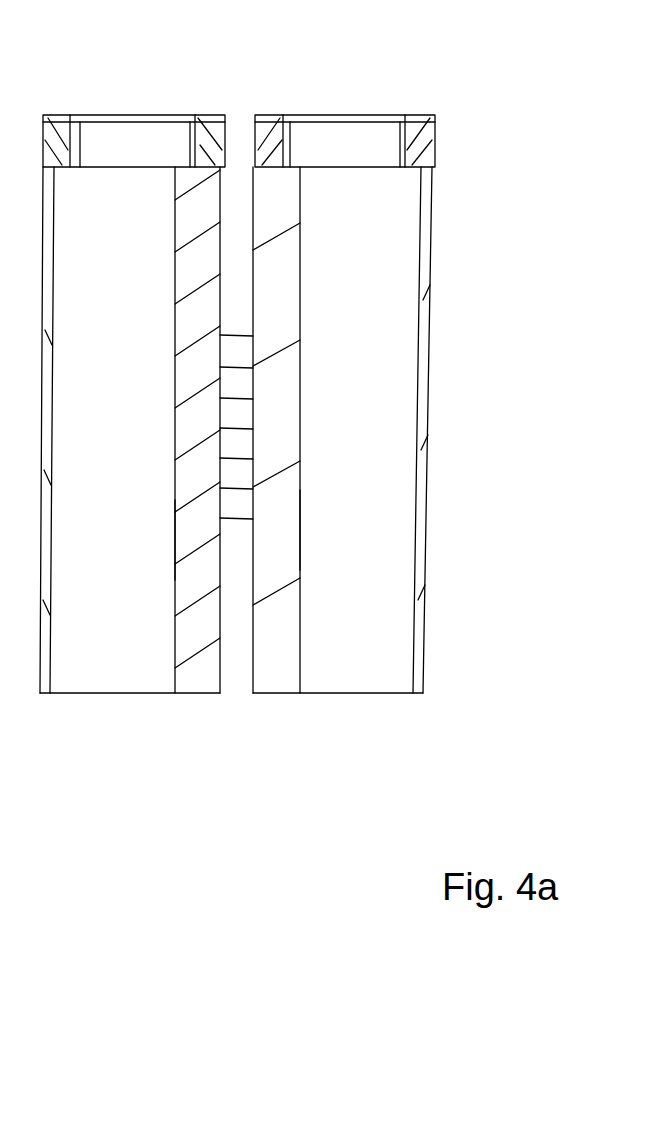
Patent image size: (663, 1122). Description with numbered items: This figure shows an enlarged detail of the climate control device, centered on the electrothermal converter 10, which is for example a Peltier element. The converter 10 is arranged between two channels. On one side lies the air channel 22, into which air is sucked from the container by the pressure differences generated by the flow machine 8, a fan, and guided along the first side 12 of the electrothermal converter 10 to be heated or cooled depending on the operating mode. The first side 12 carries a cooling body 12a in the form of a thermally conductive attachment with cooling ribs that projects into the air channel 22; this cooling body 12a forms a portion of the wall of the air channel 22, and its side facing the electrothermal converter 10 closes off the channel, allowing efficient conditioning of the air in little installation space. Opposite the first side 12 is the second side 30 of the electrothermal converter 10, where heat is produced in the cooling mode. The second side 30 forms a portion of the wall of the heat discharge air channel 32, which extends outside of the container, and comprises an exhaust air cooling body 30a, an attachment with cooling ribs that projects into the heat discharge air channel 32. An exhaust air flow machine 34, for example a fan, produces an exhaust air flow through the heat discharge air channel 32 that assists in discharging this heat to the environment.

The flow machine 8 is at (365, 148).
The exhaust air flow machine 34 is at (133, 143).
The heat discharge air channel 32 is at (131, 232).
The air channel 22 is at (385, 238).
The second side 30 is at (205, 473).
The exhaust air cooling body 30a is at (185, 535).
The first side 12 is at (270, 377).
The cooling body 12a is at (280, 528).
The electrothermal converter 10 is at (232, 418).